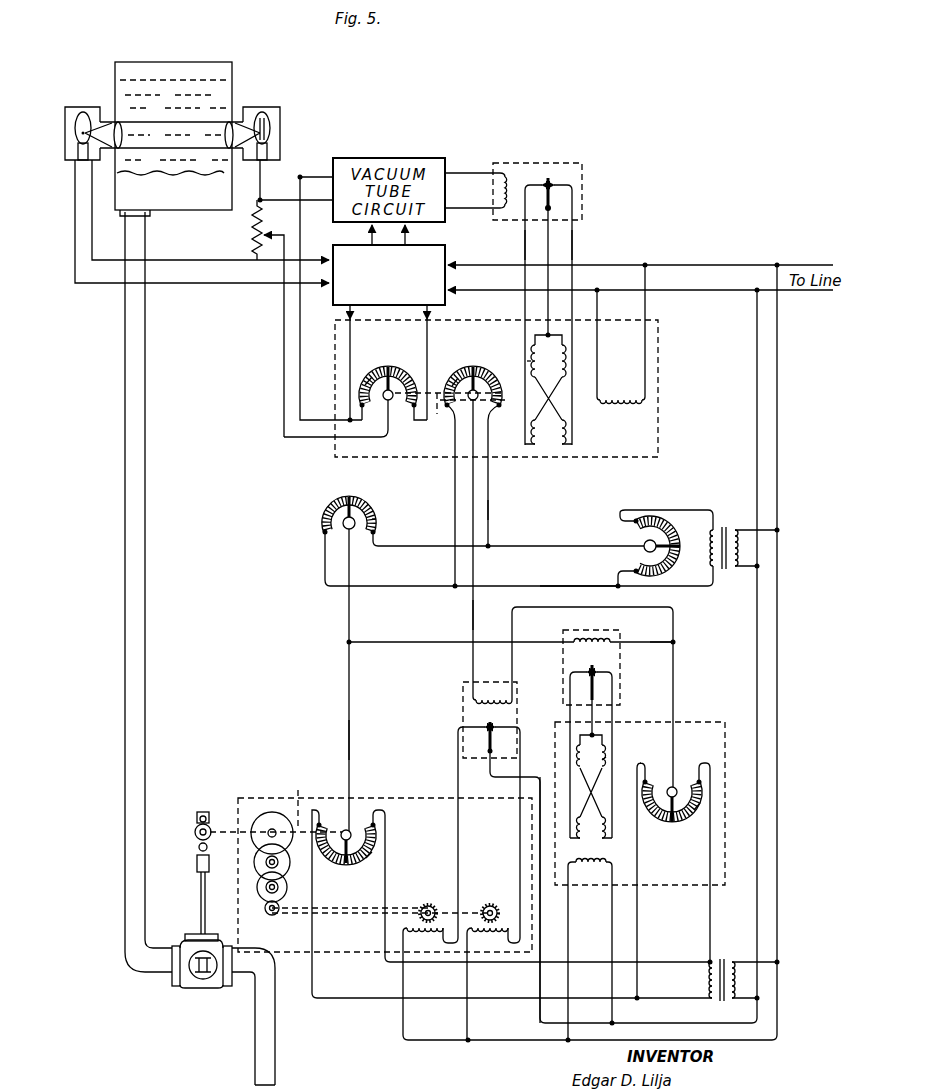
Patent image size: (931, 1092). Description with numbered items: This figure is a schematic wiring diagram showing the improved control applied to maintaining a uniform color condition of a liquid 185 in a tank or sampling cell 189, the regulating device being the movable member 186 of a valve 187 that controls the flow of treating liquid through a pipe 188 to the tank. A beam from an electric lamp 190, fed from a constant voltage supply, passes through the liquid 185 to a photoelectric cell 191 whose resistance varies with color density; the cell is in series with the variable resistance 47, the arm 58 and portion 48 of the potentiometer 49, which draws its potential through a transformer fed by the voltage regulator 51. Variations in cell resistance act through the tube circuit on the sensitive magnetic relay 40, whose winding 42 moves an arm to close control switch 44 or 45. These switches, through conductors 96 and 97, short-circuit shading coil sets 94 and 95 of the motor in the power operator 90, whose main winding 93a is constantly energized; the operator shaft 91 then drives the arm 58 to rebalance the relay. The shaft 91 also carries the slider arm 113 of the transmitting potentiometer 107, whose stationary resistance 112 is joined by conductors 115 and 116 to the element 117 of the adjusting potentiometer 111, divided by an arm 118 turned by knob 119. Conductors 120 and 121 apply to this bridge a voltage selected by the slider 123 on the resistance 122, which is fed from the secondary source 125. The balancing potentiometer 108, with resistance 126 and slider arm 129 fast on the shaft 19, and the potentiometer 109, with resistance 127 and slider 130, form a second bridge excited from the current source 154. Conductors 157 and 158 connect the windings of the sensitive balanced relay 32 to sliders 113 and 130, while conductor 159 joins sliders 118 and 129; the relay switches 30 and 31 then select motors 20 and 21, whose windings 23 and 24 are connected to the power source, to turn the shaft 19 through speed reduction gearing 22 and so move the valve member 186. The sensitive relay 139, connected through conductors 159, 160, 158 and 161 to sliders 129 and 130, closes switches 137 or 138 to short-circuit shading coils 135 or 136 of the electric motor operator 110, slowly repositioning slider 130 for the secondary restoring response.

The liquid 185 is at (232, 94).
The tank or sampling cell 189 is at (186, 202).
The electric lamp 190 is at (100, 90).
The photoelectric cell 191 is at (276, 110).
The variable resistance 47 is at (250, 238).
The voltage regulator 51 is at (445, 258).
The winding 42 is at (512, 176).
The control switch 44 is at (548, 176).
The sensitive magnetic relay 40 is at (566, 166).
The control switch 45 is at (560, 185).
The conductor 96 is at (524, 242).
The conductor 97 is at (573, 240).
The power operator 90 is at (662, 336).
The potentiometer 49 is at (398, 378).
The potentiometer portion 48 is at (372, 377).
The arm 58 is at (393, 430).
The transmitting potentiometer 107 is at (490, 378).
The stationary resistance 112 is at (458, 378).
The slider arm 113 is at (489, 440).
The shaft 91 is at (450, 415).
The shading coils 94 is at (566, 357).
The shading coils 95 is at (531, 361).
The main winding 93a is at (640, 396).
The adjusting potentiometer 111 is at (358, 497).
The stationary resistance element 117 is at (377, 519).
The arm 118 is at (352, 531).
The knob 119 is at (350, 530).
The conductor 115 is at (455, 484).
The conductor 116 is at (489, 505).
The conductor 120 is at (548, 586).
The conductor 121 is at (548, 546).
The resistance 122 is at (666, 522).
The slider 123 is at (643, 546).
The secondary source 125 is at (711, 568).
The conductor 160 is at (418, 645).
The conductor 158 is at (541, 607).
The conductor 157 is at (472, 617).
The conductor 159 is at (349, 740).
The conductor 161 is at (663, 644).
The sensitive relay 139 is at (613, 641).
The switch 138 is at (583, 672).
The switch 137 is at (601, 672).
The sensitive balanced relay 32 is at (460, 696).
The switch 31 is at (479, 728).
The switch 30 is at (501, 728).
The winding 24 is at (425, 940).
The winding 23 is at (490, 940).
The shaft 19 is at (371, 862).
The motor 21 is at (433, 905).
The motor 20 is at (496, 905).
The speed reduction gearing 22 is at (268, 916).
The slider arm 129 is at (349, 812).
The resistance 126 is at (370, 862).
The balancing potentiometer 108 is at (345, 868).
The shading coils 135 is at (577, 756).
The shading coils 136 is at (606, 758).
The electric motor operator 110 is at (592, 869).
The slider 130 is at (680, 763).
The resistance 127 is at (700, 805).
The potentiometer 109 is at (672, 828).
The current source 154 is at (709, 983).
The pipe 188 is at (146, 687).
The valve 187 is at (200, 986).
The movable member 186 is at (202, 935).